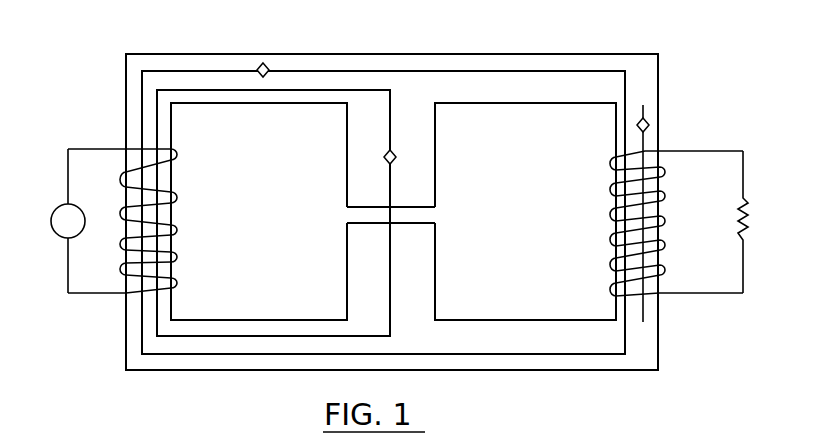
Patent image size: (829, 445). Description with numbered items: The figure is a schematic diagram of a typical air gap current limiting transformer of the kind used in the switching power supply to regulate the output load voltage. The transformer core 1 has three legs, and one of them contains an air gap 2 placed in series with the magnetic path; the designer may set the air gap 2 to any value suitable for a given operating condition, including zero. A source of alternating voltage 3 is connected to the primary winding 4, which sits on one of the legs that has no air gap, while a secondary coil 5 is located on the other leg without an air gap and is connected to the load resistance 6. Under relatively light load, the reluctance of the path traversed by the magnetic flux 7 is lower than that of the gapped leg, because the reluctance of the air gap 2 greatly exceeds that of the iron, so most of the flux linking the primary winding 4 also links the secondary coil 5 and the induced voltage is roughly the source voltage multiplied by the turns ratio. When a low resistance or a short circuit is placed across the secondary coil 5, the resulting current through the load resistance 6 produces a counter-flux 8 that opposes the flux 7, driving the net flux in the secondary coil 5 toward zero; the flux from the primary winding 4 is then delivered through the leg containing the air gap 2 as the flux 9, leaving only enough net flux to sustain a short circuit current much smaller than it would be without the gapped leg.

The transformer core 1 is at (124, 348).
The air gap 2 is at (434, 213).
The source of alternating voltage 3 is at (53, 238).
The primary winding 4 is at (184, 190).
The secondary coil 5 is at (607, 163).
The load resistance 6 is at (746, 243).
The magnetic flux 7 is at (266, 66).
The counter-flux 8 is at (647, 118).
The flux 9 is at (393, 150).